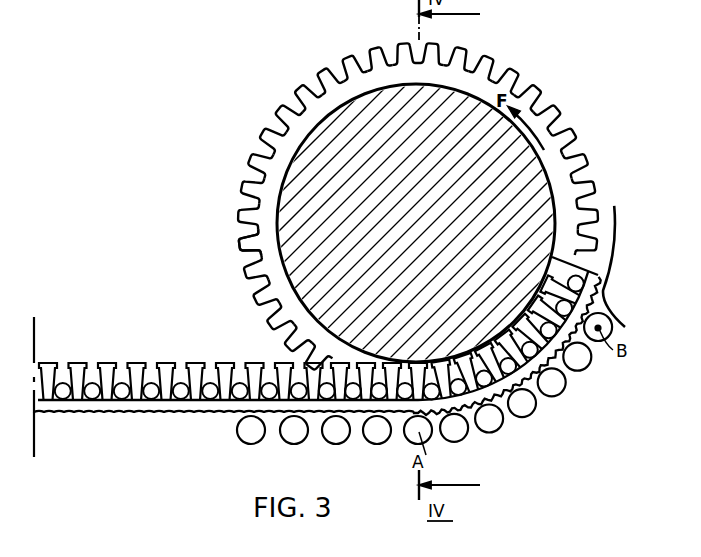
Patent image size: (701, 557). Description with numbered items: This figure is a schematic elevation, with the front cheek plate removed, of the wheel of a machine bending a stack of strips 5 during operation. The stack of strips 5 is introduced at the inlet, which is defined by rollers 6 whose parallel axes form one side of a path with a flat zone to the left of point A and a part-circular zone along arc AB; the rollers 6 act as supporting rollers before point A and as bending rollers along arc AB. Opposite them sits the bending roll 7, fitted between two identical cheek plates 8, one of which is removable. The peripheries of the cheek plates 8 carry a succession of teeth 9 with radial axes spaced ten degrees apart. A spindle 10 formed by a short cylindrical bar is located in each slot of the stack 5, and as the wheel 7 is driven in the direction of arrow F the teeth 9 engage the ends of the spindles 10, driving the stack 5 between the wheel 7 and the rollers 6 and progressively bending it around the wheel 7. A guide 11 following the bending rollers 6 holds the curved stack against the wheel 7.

The stack of strips 5 is at (490, 385).
The rollers 6 is at (331, 441).
The bending roll 7 is at (322, 160).
The cheek plates 8 is at (272, 195).
The teeth 9 is at (244, 236).
The spindle 10 is at (381, 392).
The guide 11 is at (604, 300).